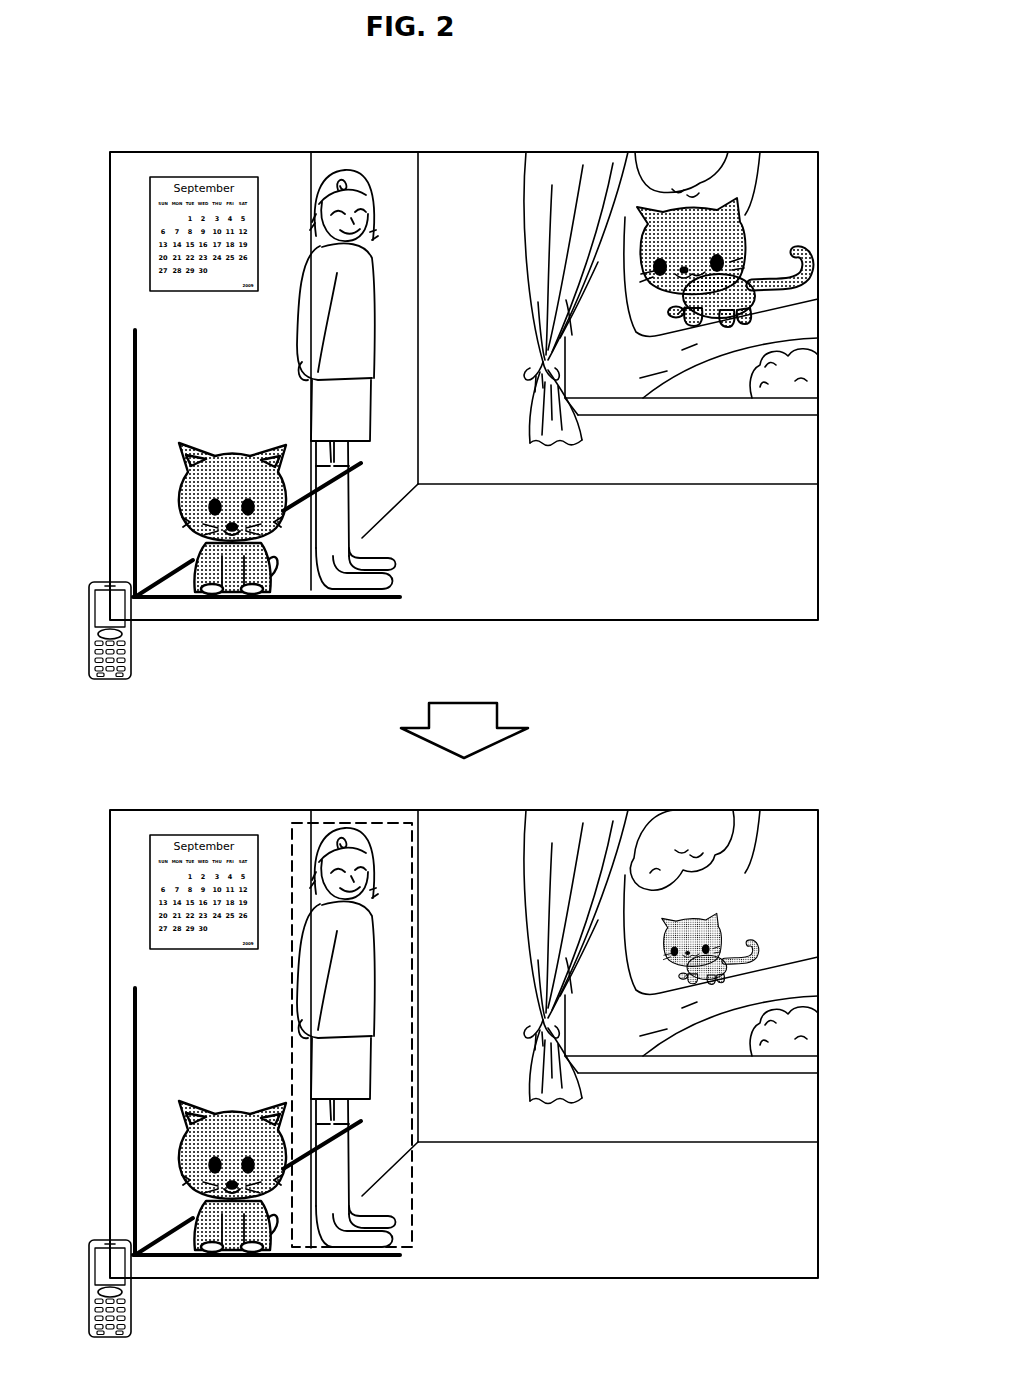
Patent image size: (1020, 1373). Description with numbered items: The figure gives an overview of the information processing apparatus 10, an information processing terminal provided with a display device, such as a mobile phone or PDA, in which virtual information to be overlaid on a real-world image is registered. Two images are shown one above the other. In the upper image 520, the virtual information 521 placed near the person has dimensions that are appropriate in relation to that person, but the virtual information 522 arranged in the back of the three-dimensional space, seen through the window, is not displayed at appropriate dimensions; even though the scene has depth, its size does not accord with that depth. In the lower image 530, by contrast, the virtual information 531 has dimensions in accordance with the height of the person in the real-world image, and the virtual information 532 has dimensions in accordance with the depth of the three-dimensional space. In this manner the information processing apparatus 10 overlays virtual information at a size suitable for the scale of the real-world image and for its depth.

The information processing apparatus 10 is at (89, 628).
The image 520 is at (464, 383).
The virtual information 521 is at (226, 602).
The virtual information 522 is at (758, 152).
The image 530 is at (464, 1040).
The virtual information 531 is at (226, 1260).
The virtual information 532 is at (757, 810).